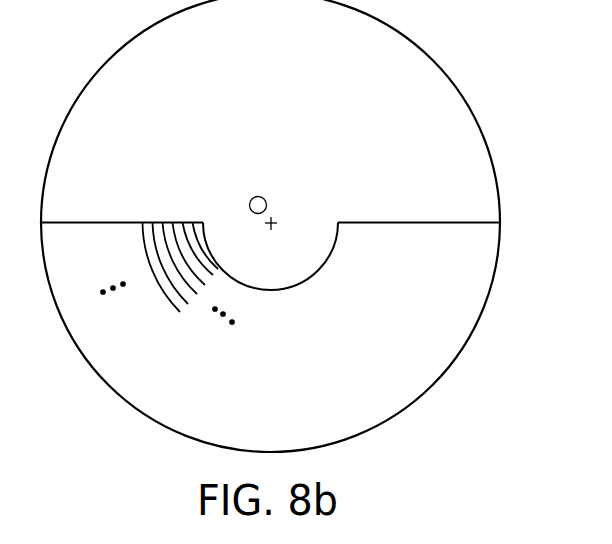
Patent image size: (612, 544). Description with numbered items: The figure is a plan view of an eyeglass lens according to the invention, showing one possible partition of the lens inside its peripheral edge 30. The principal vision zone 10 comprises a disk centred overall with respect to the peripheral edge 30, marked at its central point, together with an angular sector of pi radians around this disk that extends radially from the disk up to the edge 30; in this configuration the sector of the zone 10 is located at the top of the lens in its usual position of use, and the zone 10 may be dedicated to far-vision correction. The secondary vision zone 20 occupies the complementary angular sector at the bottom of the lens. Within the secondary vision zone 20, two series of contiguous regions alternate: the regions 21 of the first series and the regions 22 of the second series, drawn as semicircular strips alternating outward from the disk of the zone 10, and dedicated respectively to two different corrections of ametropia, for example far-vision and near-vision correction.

The principal vision zone 10 is at (289, 116).
The secondary vision zone 20 is at (417, 306).
The regions of the first series 21 is at (192, 258).
The regions of the second series 22 is at (212, 274).
The peripheral edge 30 is at (437, 382).